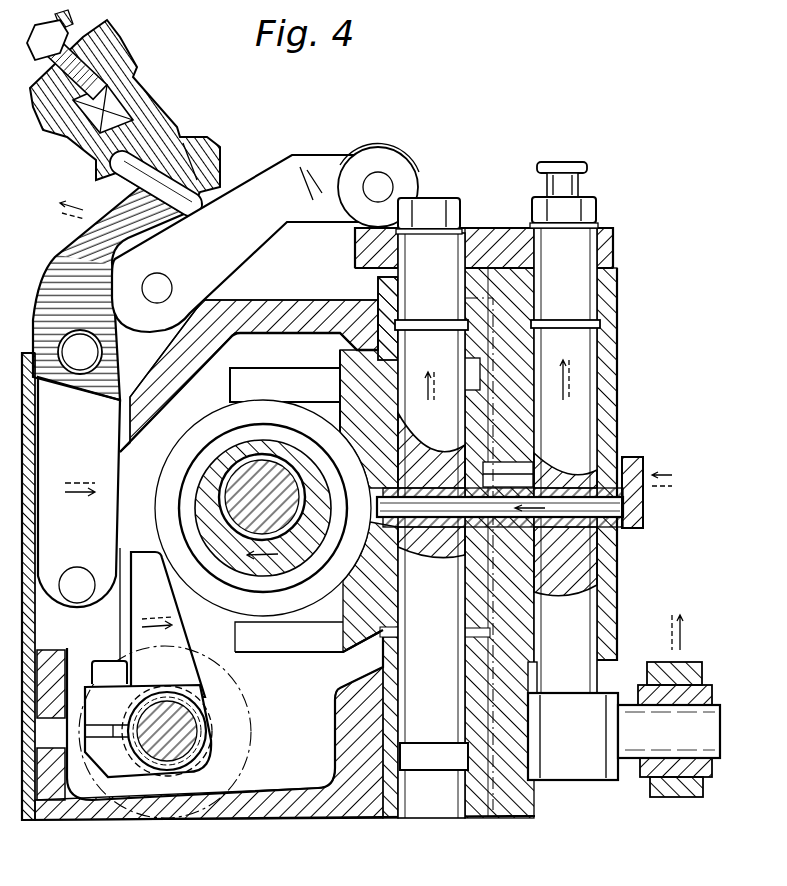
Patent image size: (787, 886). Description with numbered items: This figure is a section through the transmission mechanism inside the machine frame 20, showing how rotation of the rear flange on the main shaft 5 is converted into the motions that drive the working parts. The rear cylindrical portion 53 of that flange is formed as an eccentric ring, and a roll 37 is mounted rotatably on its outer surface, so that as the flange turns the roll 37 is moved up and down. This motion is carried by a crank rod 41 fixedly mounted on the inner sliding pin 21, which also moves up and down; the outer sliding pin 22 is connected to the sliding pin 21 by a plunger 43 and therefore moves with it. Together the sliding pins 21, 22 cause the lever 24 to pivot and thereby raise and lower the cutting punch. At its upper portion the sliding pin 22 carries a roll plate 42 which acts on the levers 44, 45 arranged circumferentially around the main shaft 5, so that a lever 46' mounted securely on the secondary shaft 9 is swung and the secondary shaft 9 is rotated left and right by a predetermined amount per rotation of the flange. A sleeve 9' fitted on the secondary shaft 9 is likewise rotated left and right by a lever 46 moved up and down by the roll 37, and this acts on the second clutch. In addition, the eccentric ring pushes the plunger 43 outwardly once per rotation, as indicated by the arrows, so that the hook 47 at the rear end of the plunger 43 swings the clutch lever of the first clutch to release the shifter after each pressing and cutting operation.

The main shaft 5 is at (232, 487).
The secondary shaft 9 is at (148, 731).
The sleeve 9' is at (165, 732).
The machine frame 20 is at (308, 790).
The sliding pin 21 is at (410, 292).
The sliding pin 22 is at (567, 304).
The lever 24 is at (660, 795).
The roll 37 is at (167, 468).
The crank rod 41 is at (265, 645).
The roll plate 42 is at (500, 228).
The plunger 43 is at (557, 500).
The lever 44 is at (275, 204).
The lever 45 is at (63, 263).
The lever 46 is at (170, 622).
The lever 46' is at (102, 656).
The hook 47 is at (632, 524).
The rear cylindrical portion 53 is at (198, 512).